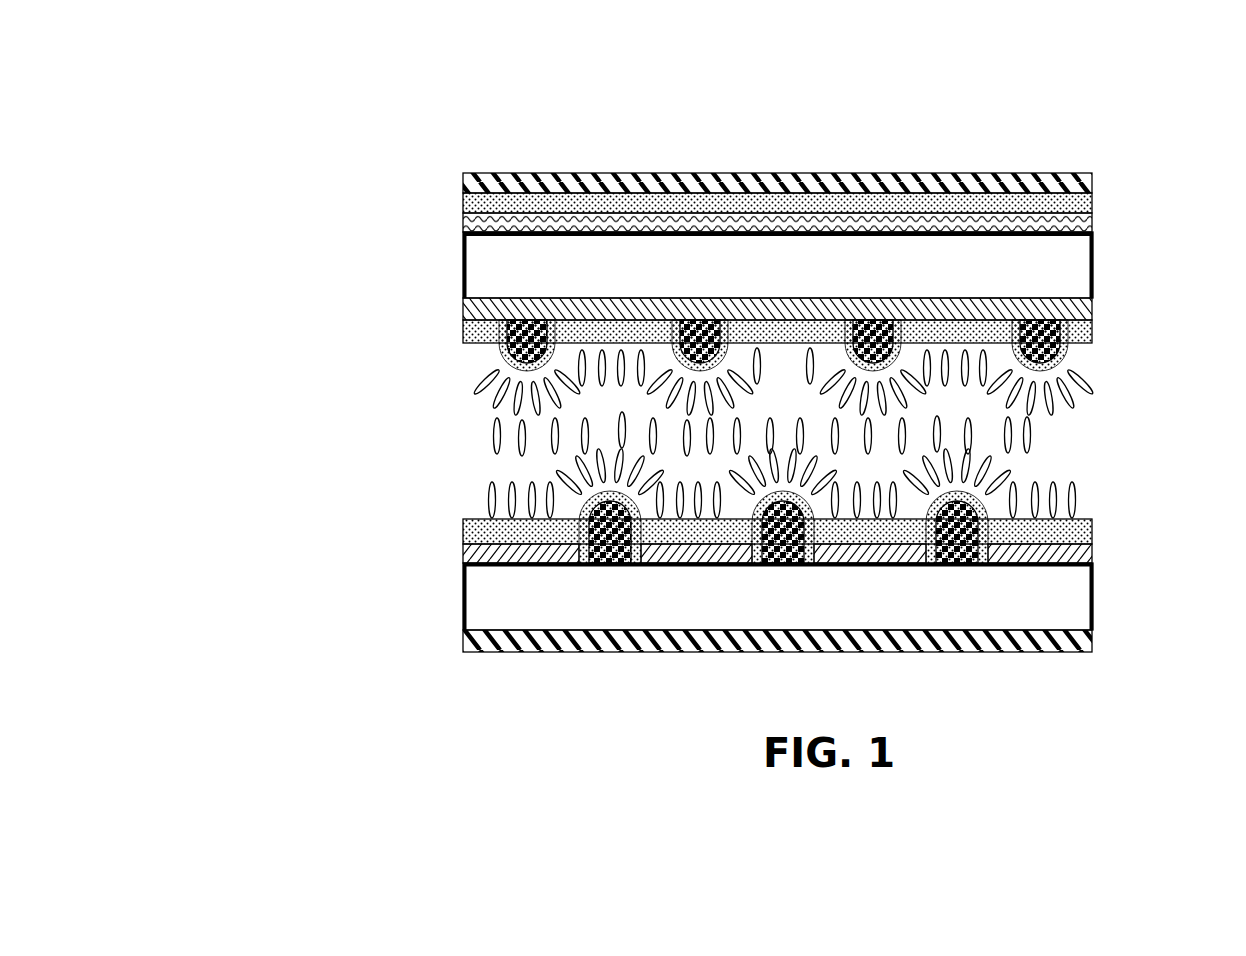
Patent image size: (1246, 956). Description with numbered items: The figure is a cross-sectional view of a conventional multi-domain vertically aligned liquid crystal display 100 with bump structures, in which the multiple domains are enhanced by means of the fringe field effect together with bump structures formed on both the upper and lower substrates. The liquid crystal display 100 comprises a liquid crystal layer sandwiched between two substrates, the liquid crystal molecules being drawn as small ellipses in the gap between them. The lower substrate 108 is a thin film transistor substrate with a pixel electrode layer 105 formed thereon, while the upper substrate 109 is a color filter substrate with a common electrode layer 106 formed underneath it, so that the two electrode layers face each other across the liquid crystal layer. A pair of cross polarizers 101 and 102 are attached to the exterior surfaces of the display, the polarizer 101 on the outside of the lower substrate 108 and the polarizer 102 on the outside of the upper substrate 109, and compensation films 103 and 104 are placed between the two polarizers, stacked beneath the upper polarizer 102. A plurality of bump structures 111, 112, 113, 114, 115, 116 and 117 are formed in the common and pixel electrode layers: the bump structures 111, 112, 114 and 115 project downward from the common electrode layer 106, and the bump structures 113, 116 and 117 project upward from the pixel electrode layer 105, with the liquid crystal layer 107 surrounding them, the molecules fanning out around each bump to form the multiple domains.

The liquid crystal display 100 is at (467, 0).
The polarizer 101 is at (1092, 642).
The polarizer 102 is at (1093, 183).
The compensation film 103 is at (1093, 207).
The compensation film 104 is at (1093, 228).
The pixel electrode layer 105 is at (1092, 555).
The common electrode layer 106 is at (1093, 324).
The liquid crystal layer 107 is at (1013, 465).
The lower substrate 108 is at (490, 597).
The upper substrate 109 is at (1043, 273).
The bump structure 111 is at (1063, 346).
The bump structure 112 is at (892, 357).
The bump structure 113 is at (1017, 536).
The bump structure 114 is at (500, 360).
The bump structure 115 is at (678, 356).
The bump structure 116 is at (577, 513).
The bump structure 117 is at (765, 548).